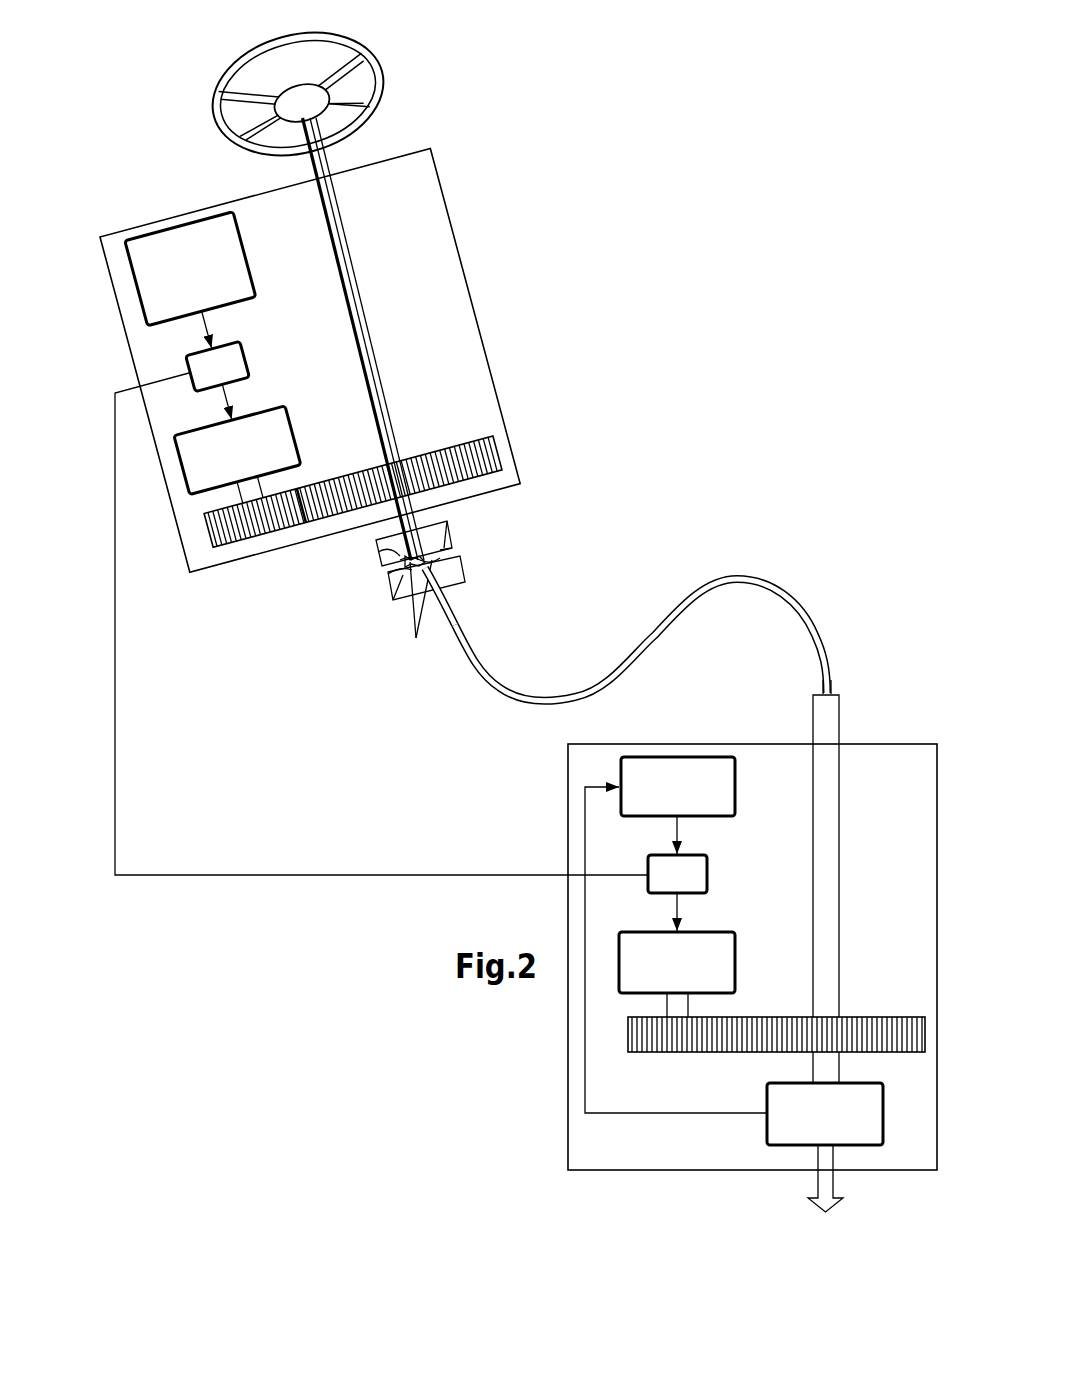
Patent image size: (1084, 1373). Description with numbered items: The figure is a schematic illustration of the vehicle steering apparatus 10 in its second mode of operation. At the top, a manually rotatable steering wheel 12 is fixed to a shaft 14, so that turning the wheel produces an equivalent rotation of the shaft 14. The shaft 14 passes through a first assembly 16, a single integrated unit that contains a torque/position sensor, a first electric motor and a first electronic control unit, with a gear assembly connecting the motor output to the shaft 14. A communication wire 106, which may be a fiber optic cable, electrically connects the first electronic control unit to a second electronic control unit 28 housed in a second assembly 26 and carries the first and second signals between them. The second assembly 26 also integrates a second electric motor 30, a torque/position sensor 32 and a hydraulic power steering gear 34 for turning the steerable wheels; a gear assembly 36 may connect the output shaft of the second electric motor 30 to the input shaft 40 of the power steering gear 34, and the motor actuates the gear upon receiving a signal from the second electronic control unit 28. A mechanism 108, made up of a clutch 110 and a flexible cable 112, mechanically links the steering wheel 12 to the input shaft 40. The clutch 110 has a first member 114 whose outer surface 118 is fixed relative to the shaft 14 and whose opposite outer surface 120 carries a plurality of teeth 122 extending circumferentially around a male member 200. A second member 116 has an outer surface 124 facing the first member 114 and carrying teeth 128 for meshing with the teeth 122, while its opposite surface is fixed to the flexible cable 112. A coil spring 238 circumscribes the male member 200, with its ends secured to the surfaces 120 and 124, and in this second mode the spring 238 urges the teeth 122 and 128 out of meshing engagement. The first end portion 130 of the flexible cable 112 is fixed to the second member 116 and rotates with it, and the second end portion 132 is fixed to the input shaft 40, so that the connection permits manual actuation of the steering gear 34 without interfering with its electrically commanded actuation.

The vehicle steering apparatus 10 is at (633, 240).
The vehicle steering wheel 12 is at (361, 42).
The shaft 14 is at (330, 208).
The first assembly 16 is at (126, 309).
The second assembly 26 is at (905, 790).
The second electronic control unit 28 is at (707, 881).
The second electric motor 30 is at (735, 970).
The torque/position sensor 32 is at (735, 808).
The hydraulic power steering gear 34 is at (884, 1104).
The gear assembly 36 is at (725, 1056).
The input shaft 40 is at (825, 717).
The communication wire 106 is at (381, 624).
The mechanism 108 is at (452, 623).
The clutch 110 is at (478, 539).
The flexible cable 112 is at (792, 581).
The first member 114 is at (398, 543).
The second member 116 is at (456, 566).
The outer surface 118 is at (378, 550).
The outer surface 120 is at (395, 581).
The teeth 122 is at (388, 566).
The outer surface 124 is at (404, 601).
The teeth 128 is at (418, 618).
The first end portion 130 is at (433, 604).
The second end portion 132 is at (832, 683).
The male member 200 is at (446, 545).
The coil spring 238 is at (420, 556).